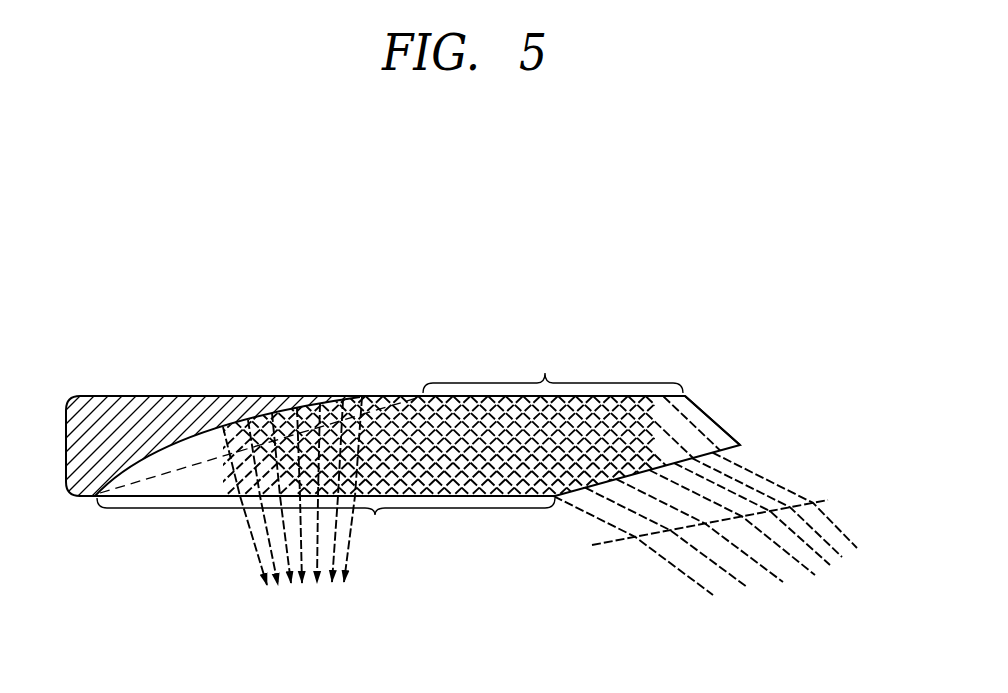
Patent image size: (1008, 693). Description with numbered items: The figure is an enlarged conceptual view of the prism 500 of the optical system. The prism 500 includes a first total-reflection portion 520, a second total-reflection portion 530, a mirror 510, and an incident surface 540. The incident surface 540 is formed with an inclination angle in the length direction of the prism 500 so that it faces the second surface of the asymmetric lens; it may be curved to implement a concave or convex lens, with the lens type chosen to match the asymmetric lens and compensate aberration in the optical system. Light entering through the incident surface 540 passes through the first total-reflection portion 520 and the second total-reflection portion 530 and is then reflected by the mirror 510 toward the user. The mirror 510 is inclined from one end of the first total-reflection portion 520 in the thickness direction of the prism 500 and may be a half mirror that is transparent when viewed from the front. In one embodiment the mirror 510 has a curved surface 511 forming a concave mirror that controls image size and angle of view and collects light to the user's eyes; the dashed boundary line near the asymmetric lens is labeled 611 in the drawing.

The prism 500 is at (278, 330).
The mirror 510 is at (145, 480).
The curved surface 511 is at (178, 443).
The first total-reflection portion 520 is at (553, 369).
The second total-reflection portion 530 is at (326, 491).
The incident surface 540 is at (738, 447).
The light exit boundary line 611 is at (805, 498).